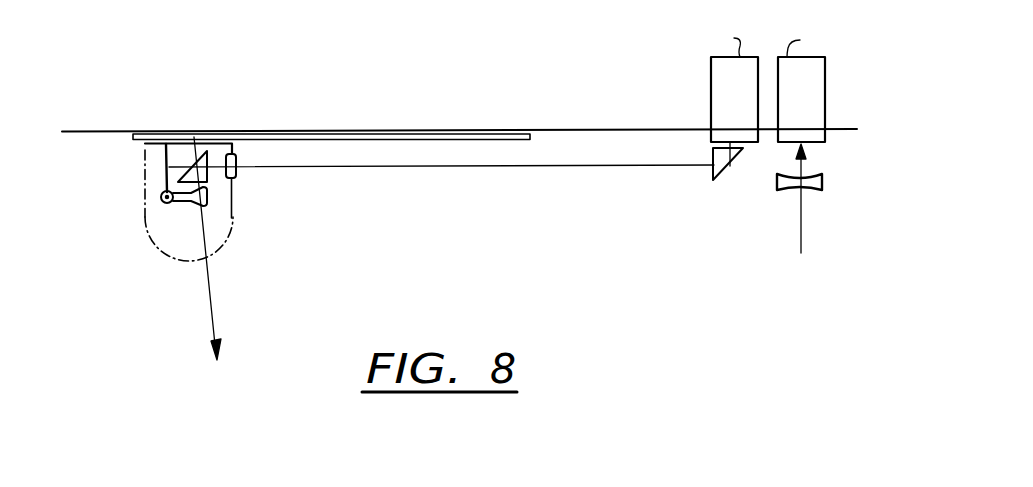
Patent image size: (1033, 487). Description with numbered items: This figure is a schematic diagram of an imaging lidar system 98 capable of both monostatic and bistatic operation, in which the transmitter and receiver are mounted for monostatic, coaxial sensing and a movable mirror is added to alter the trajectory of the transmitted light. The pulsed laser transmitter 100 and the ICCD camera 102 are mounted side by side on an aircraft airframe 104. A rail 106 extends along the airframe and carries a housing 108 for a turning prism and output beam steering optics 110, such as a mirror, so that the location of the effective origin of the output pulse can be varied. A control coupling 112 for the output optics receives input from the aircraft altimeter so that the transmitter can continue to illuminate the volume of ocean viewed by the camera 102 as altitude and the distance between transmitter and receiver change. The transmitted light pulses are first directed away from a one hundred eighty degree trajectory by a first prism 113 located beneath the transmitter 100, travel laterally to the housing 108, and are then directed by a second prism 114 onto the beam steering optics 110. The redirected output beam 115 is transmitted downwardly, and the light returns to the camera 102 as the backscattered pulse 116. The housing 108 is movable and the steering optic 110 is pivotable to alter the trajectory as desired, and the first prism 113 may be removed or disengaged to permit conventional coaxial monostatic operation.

The imaging lidar system 98 is at (413, 97).
The pulsed laser transmitter 100 is at (711, 90).
The ICCD camera 102 is at (826, 90).
The aircraft airframe 104 is at (92, 130).
The rail 106 is at (333, 131).
The housing 108 is at (150, 244).
The output beam steering optics 110 is at (210, 204).
The control coupling 112 is at (165, 166).
The first prism 113 is at (715, 175).
The second prism 114 is at (197, 134).
The redirected output beam 115 is at (208, 293).
The backscattered pulse 116 is at (801, 253).